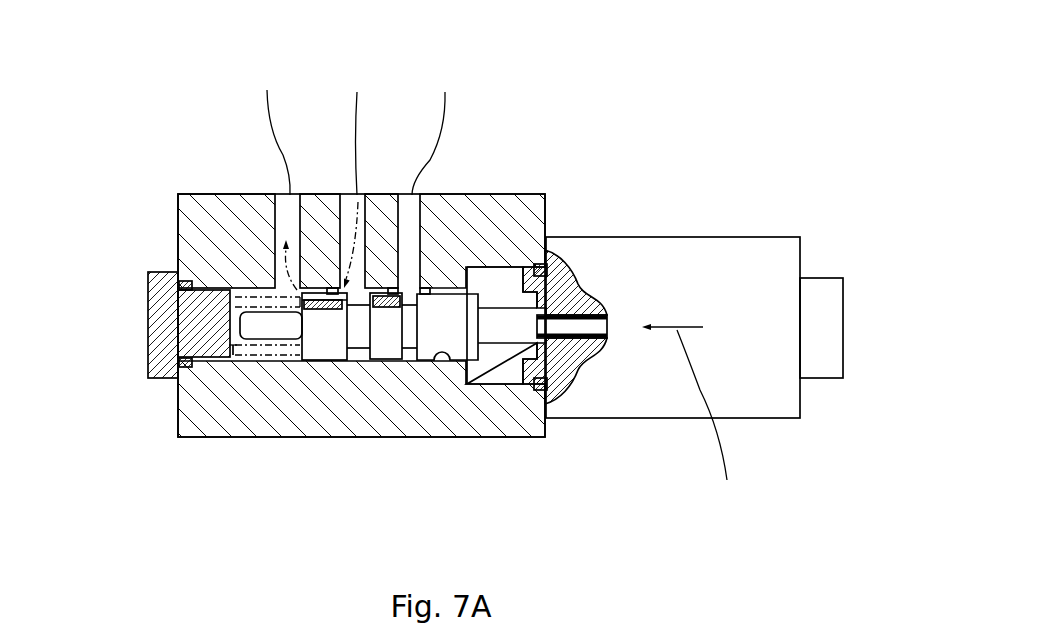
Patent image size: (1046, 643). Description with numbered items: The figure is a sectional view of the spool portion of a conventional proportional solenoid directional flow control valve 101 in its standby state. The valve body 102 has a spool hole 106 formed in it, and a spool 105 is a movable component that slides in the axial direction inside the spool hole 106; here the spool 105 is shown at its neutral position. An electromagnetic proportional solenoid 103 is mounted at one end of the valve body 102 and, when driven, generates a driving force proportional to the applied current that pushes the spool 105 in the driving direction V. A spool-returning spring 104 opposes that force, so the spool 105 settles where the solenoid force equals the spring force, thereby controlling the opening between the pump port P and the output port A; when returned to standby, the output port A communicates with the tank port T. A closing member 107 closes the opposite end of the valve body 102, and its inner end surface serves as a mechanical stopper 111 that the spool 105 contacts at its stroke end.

The proportional solenoid directional flow control valve 101 is at (637, 98).
The valve body 102 is at (477, 195).
The electromagnetic proportional solenoid 103 is at (687, 236).
The spool-returning spring 104 is at (266, 358).
The spool 105 is at (320, 366).
The spool hole 106 is at (442, 362).
The closing member 107 is at (160, 312).
The mechanical stopper 111 is at (238, 352).